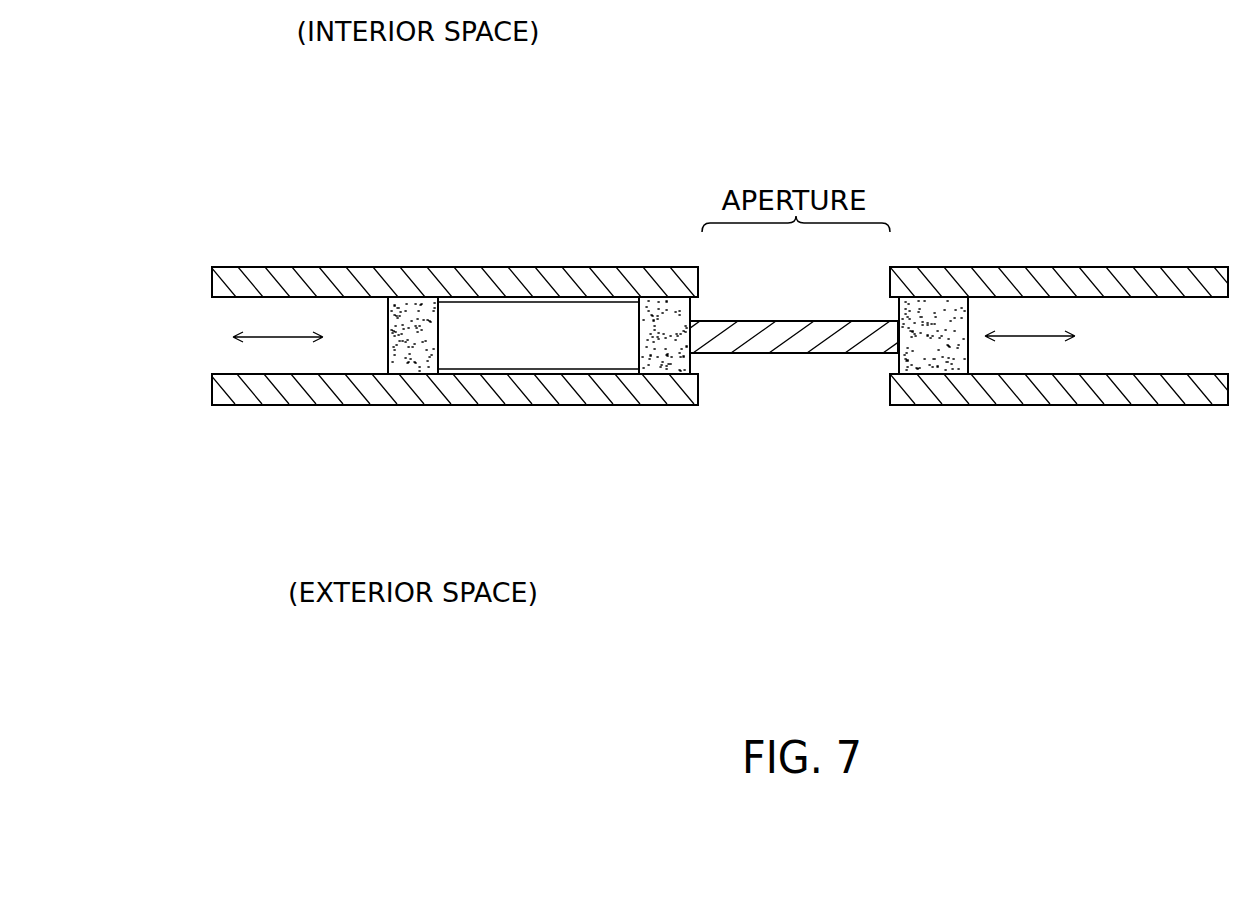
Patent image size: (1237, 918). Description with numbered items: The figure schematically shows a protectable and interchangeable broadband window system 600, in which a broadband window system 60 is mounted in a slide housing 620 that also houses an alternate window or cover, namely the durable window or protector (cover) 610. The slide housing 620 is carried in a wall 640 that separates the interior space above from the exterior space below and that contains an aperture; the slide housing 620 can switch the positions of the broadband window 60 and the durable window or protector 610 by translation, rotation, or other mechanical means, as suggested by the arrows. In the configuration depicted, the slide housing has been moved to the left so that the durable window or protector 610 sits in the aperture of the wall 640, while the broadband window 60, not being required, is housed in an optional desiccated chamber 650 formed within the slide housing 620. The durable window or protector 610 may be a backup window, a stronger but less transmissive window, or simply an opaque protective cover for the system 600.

The protectable and interchangeable broadband window system 600 is at (211, 622).
The broadband window system 60 is at (518, 363).
The durable window or protector (cover) 610 is at (778, 340).
The slide housing 620 is at (948, 310).
The wall 640 is at (279, 278).
The optional desiccated chamber 650 is at (538, 300).